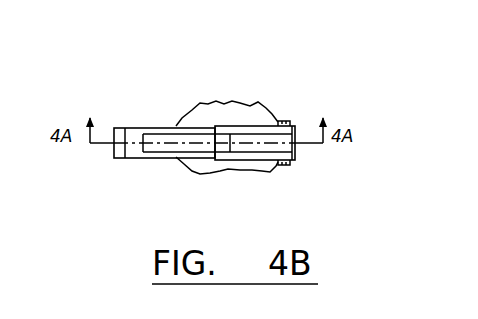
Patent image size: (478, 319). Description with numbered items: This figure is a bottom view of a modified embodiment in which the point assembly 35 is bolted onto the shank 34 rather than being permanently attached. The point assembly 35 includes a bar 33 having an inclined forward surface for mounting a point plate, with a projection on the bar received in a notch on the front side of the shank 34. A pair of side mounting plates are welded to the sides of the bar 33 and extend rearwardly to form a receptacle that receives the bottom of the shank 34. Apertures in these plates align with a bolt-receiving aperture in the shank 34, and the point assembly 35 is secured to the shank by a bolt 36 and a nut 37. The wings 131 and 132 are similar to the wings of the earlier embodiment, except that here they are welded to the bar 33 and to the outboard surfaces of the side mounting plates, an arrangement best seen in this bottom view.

The bar 33 is at (178, 128).
The shank 34 is at (300, 148).
The point assembly 35 is at (188, 172).
The bolt 36 is at (294, 164).
The nut 37 is at (291, 120).
The wing 131 is at (236, 175).
The wing 132 is at (236, 99).